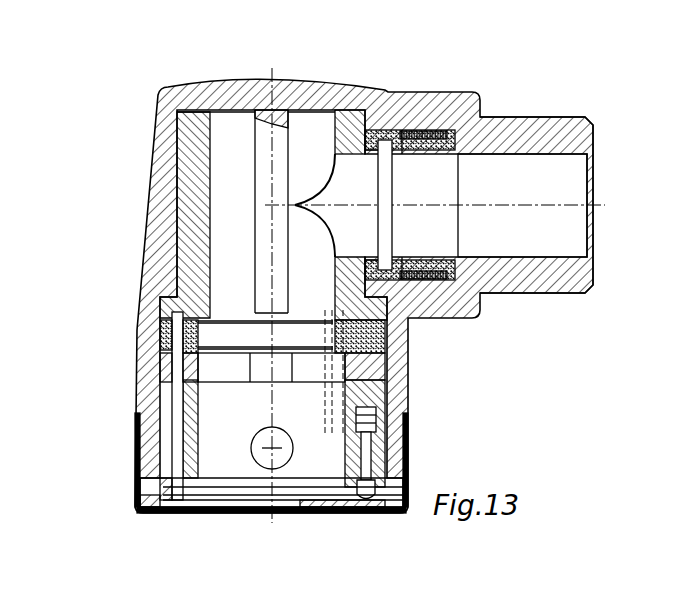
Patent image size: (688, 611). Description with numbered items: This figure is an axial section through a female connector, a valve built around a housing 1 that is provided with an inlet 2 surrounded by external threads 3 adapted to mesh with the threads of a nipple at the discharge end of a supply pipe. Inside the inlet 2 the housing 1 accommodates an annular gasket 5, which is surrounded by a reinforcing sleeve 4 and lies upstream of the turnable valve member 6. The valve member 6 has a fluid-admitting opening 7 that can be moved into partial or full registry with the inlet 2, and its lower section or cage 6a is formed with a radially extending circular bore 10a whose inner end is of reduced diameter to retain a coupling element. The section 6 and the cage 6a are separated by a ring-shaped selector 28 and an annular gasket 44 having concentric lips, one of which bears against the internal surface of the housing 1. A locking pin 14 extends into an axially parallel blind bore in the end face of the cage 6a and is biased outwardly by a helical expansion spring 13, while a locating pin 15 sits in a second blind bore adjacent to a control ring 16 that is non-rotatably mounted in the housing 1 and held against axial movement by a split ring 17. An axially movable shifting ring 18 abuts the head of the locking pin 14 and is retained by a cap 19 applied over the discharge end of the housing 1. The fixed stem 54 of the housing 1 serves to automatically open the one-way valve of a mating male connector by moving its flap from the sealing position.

The housing 1 is at (160, 230).
The inlet 2 is at (520, 170).
The external threads 3 is at (500, 117).
The reinforcing sleeve 4 is at (440, 127).
The annular gasket 5 is at (407, 105).
The valve member 6 is at (192, 198).
The lower section or cage 6a is at (138, 428).
The fluid-admitting opening 7 is at (385, 93).
The radially extending circular bore 10a is at (255, 455).
The helical expansion spring 13 is at (345, 473).
The locking pin 14 is at (358, 488).
The locating pin 15 is at (178, 405).
The control ring 16 is at (162, 483).
The split ring 17 is at (140, 500).
The shifting ring 18 is at (372, 503).
The cap 19 is at (157, 512).
The ring-shaped selector 28 is at (165, 367).
The annular gasket 44 is at (163, 343).
The fixed stem 54 is at (262, 163).